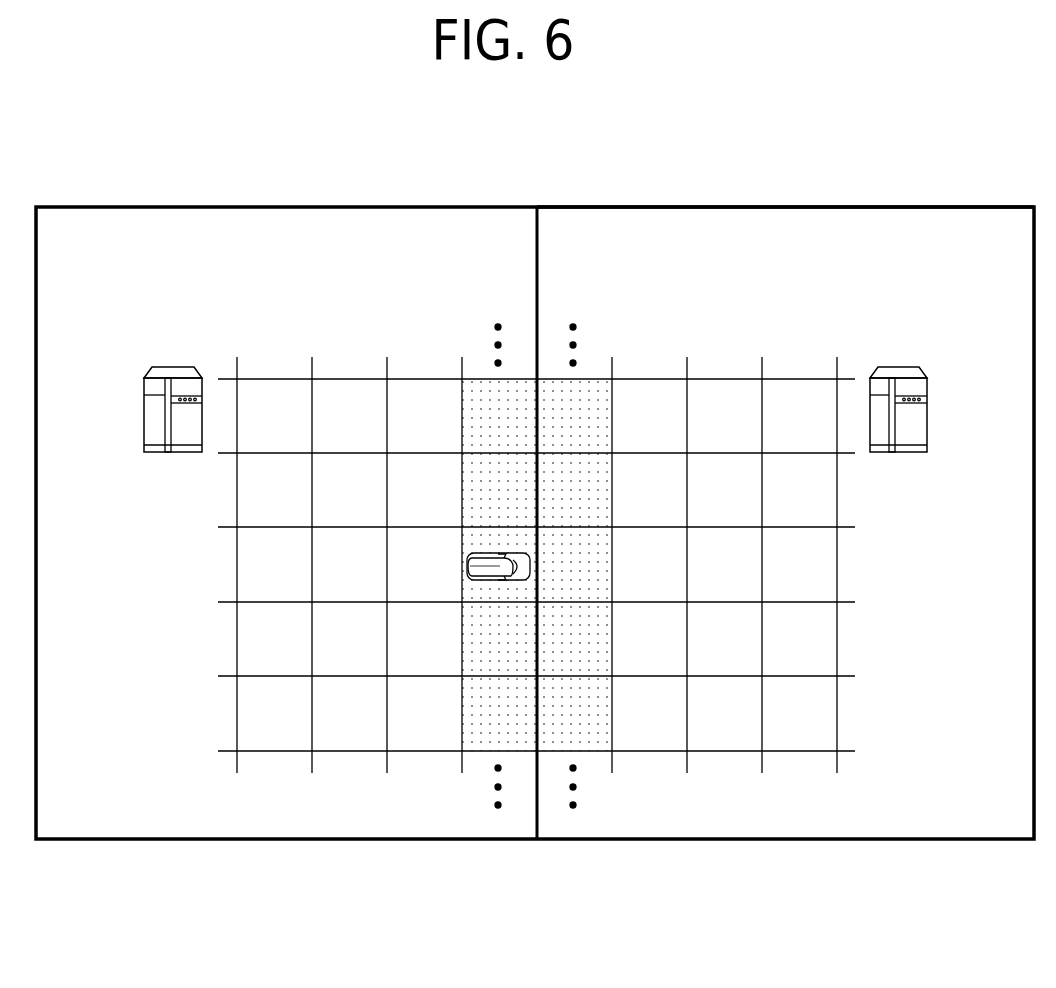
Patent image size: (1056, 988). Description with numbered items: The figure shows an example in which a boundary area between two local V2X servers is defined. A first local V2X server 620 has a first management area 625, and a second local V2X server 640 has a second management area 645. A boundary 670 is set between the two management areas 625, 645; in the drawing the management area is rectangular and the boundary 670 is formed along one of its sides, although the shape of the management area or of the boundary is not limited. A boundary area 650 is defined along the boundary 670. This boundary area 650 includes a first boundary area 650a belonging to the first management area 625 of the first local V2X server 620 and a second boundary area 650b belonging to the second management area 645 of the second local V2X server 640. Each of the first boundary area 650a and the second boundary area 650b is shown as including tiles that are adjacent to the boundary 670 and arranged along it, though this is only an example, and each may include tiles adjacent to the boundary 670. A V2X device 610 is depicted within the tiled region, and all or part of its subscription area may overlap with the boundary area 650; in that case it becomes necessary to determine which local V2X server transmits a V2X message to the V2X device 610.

The V2X device 610 is at (466, 561).
The first local V2X server 620 is at (171, 366).
The first management area 625 is at (284, 206).
The second local V2X server 640 is at (896, 366).
The second management area 645 is at (783, 206).
The boundary area 650 is at (463, 261).
The first boundary area 650a is at (537, 304).
The second boundary area 650b is at (537, 304).
The boundary 670 is at (538, 822).